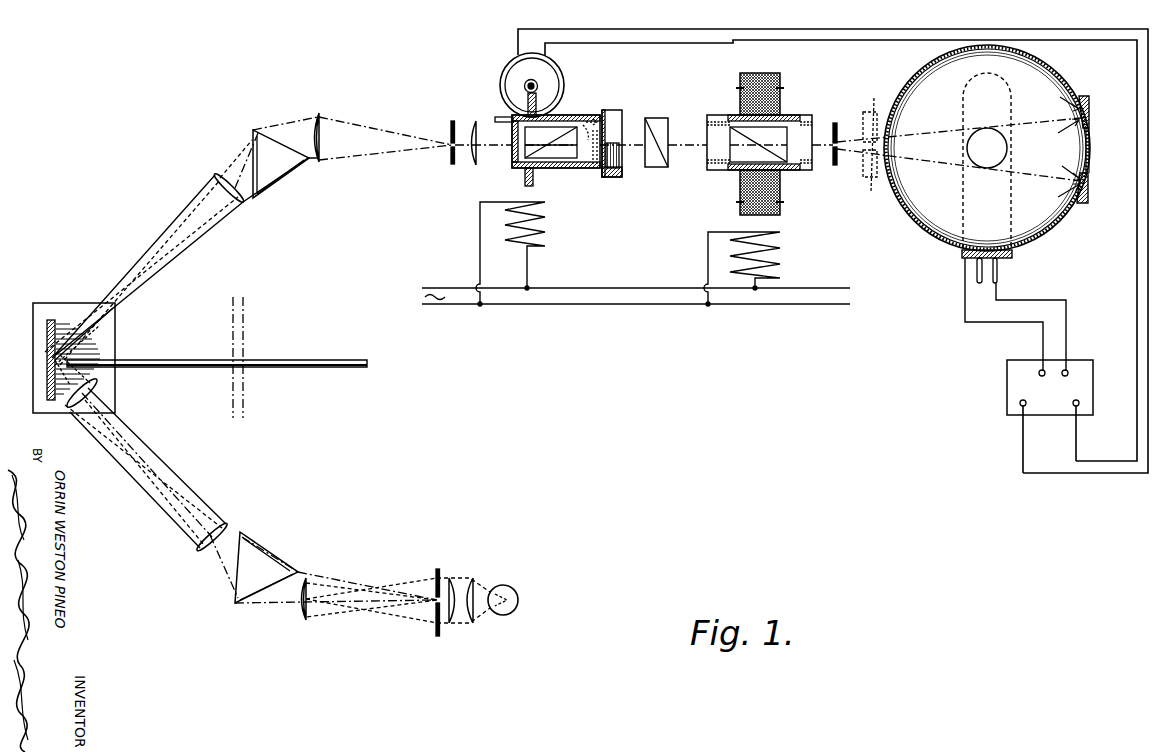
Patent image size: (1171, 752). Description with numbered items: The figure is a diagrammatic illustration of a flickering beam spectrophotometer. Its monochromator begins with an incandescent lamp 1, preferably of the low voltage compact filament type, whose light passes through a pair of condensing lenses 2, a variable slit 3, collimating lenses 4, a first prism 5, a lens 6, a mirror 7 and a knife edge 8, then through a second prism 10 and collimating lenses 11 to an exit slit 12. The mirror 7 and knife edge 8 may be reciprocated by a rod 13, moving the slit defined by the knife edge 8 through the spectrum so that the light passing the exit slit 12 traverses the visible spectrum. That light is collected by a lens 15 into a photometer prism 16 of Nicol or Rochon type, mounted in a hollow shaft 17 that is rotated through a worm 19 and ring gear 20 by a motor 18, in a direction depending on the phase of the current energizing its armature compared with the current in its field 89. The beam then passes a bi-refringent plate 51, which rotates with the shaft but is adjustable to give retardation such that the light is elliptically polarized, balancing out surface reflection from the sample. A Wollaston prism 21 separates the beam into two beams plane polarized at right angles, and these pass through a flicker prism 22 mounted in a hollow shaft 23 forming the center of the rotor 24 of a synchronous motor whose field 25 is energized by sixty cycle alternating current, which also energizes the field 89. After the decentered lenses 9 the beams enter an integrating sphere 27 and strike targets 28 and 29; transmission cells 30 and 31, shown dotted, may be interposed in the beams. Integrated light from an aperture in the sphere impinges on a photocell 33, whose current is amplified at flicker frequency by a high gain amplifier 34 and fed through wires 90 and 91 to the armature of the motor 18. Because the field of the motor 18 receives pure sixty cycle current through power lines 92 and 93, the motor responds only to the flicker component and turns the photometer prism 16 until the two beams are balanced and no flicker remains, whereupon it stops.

The incandescent lamp 1 is at (518, 597).
The condensing lenses 2 is at (459, 625).
The variable slit 3 is at (434, 603).
The collimating lenses 4 is at (305, 622).
The first prism 5 is at (237, 592).
The lens 6 is at (98, 388).
The mirror 7 is at (52, 320).
The knife edge 8 is at (100, 356).
The decentered lenses 9 is at (836, 123).
The second prism 10 is at (280, 180).
The collimating lenses 11 is at (215, 178).
The exit slit 12 is at (450, 148).
The rod 13 is at (342, 368).
The lens 15 is at (474, 166).
The photometer prism 16 is at (575, 126).
The hollow shaft 17 is at (590, 172).
The motor 18 is at (565, 80).
The worm 19 is at (525, 84).
The ring gear 20 is at (534, 186).
The Wollaston prism 21 is at (657, 118).
The flicker prism 22 is at (743, 131).
The hollow shaft 23 is at (716, 171).
The rotor 24 is at (772, 73).
The field 25 is at (780, 263).
The integrating sphere 27 is at (926, 225).
The target 28 is at (1091, 116).
The target 29 is at (1090, 184).
The transmission cell 30 is at (875, 135).
The transmission cell 31 is at (867, 178).
The photocell 33 is at (1010, 258).
The amplifier 34 is at (1006, 419).
The bi-refringent plate 51 is at (620, 166).
The field 89 is at (545, 240).
The wire 90 is at (1137, 256).
The wire 91 is at (1148, 271).
The power line 92 is at (580, 288).
The power line 93 is at (592, 306).